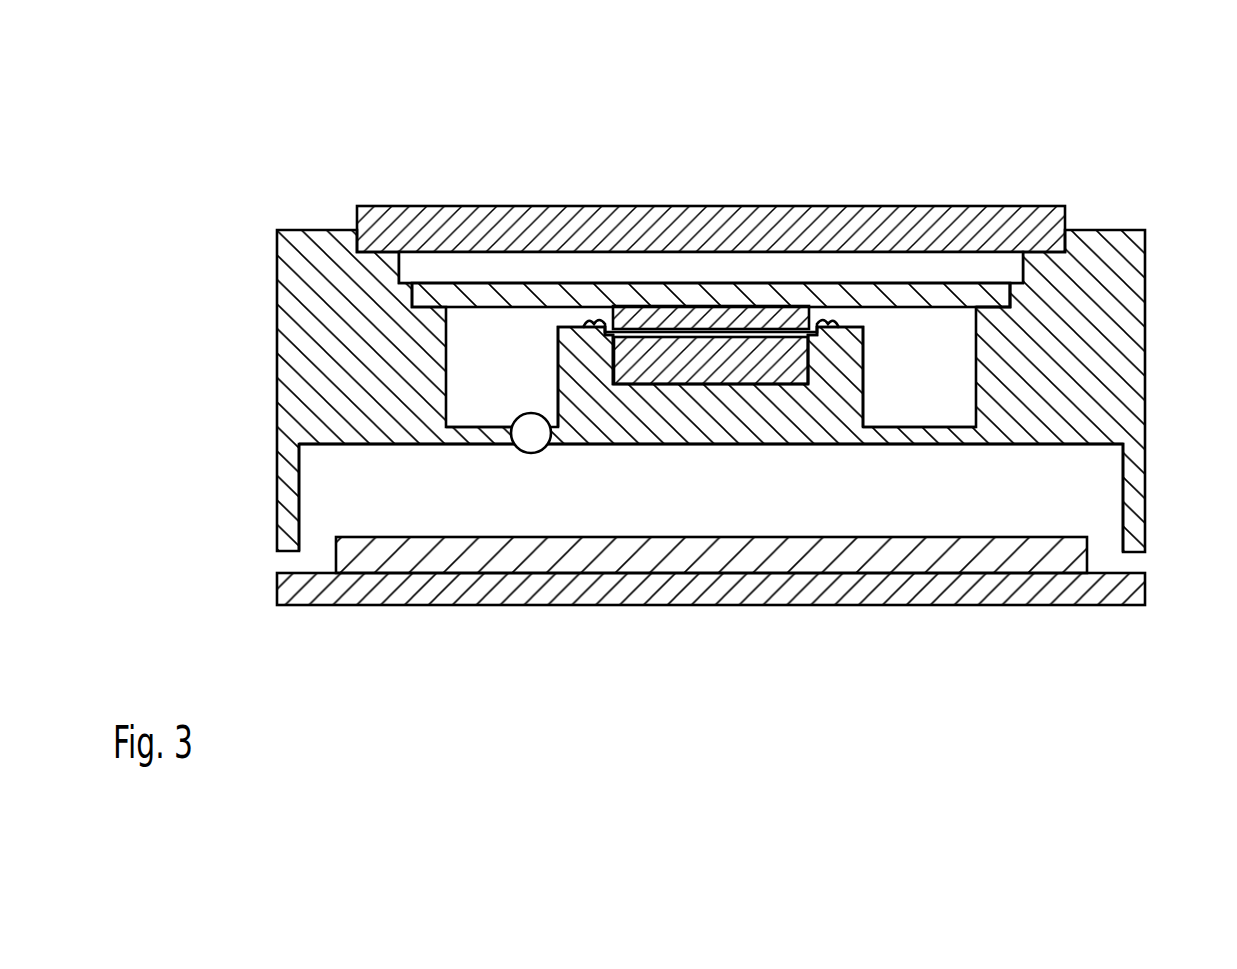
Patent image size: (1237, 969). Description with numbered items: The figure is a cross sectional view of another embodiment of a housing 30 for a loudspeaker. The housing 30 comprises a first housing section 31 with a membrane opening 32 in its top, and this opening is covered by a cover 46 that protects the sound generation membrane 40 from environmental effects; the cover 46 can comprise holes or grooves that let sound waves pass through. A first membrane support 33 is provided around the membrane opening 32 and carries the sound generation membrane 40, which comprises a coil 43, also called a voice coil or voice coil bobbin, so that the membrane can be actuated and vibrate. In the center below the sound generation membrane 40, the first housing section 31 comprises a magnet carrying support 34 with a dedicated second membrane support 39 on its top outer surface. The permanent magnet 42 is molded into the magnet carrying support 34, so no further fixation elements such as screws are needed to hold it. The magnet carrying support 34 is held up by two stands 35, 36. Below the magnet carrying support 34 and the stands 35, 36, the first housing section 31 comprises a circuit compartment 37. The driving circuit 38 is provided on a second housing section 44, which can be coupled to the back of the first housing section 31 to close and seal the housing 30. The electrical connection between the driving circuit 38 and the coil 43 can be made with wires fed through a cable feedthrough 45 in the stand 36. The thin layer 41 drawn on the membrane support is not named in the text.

The housing 30 is at (1181, 138).
The first housing section 31 is at (1130, 259).
The membrane opening 32 is at (1002, 262).
The first membrane support 33 is at (1005, 312).
The magnet carrying support 34 is at (774, 393).
The stand 35 is at (903, 443).
The stand 36 is at (483, 444).
The circuit compartment 37 is at (832, 495).
The driving circuit 38 is at (992, 563).
The second membrane support 39 is at (850, 337).
The sound generation membrane 40 is at (455, 295).
The membrane 41 is at (588, 320).
The permanent magnet 42 is at (655, 355).
The coil 43 is at (722, 318).
The second housing section 44 is at (309, 590).
The cable feedthrough 45 is at (531, 443).
The cover 46 is at (930, 220).